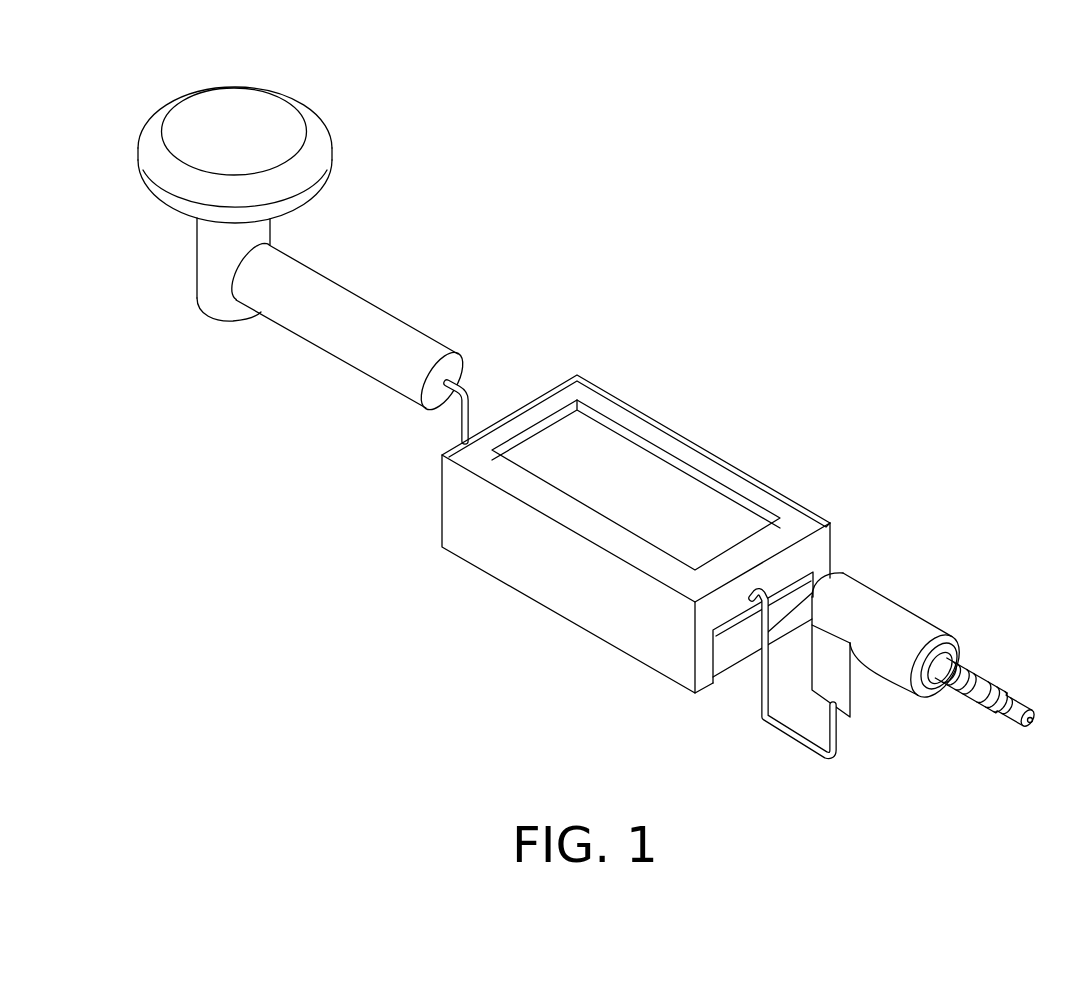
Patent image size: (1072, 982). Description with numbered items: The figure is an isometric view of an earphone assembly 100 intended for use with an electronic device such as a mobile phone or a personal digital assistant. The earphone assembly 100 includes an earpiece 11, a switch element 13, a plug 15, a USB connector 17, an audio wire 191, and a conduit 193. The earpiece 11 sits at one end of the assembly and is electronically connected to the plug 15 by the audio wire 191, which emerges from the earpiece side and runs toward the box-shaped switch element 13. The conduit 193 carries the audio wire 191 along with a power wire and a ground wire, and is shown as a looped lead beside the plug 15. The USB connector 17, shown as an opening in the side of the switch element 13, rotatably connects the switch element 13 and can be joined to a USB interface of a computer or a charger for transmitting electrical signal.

The earphone assembly 100 is at (767, 110).
The earpiece 11 is at (195, 125).
The switch element 13 is at (473, 508).
The plug 15 is at (917, 630).
The USB connector 17 is at (731, 655).
The audio wire 191 is at (466, 392).
The conduit 193 is at (790, 738).